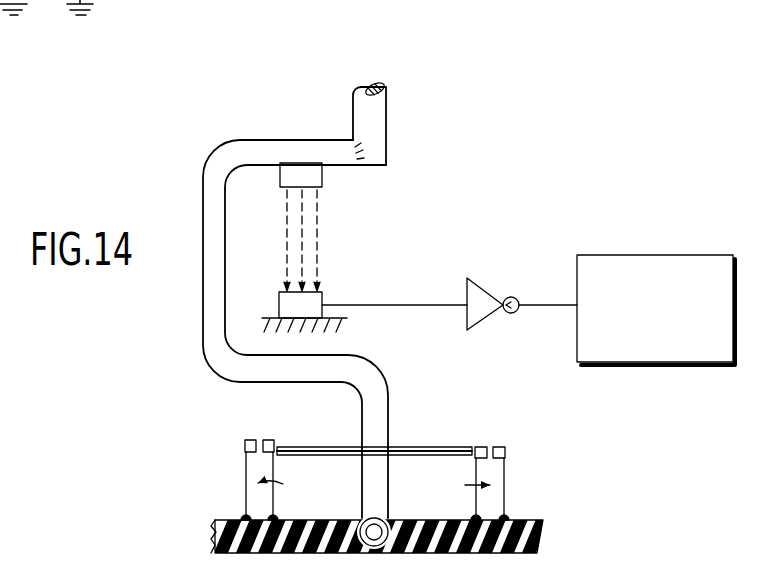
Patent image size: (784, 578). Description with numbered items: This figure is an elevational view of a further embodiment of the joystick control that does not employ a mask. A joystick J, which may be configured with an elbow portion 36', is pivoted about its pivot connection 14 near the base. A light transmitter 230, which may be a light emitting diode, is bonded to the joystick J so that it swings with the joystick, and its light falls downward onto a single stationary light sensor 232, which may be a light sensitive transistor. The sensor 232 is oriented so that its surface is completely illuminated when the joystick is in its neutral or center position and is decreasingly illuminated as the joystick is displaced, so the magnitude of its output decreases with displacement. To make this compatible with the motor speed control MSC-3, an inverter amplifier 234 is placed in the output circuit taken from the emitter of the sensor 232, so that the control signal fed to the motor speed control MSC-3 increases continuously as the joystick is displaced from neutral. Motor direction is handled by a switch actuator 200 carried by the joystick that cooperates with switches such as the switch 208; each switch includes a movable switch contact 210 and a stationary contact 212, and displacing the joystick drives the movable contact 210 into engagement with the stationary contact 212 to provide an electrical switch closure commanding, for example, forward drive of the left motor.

The C-shaped support arm 36' is at (295, 305).
The tool T is at (388, 92).
The light transmitter 230 is at (322, 173).
The light sensor 232 is at (323, 301).
The inverter amplifier 234 is at (503, 301).
The motor speed control MSC-3 is at (660, 256).
The bar 200 is at (318, 447).
The movable switch contact 210 is at (483, 447).
The switch 208 is at (507, 446).
The stationary contact 212 is at (505, 466).
The pivot connection 14 is at (388, 520).